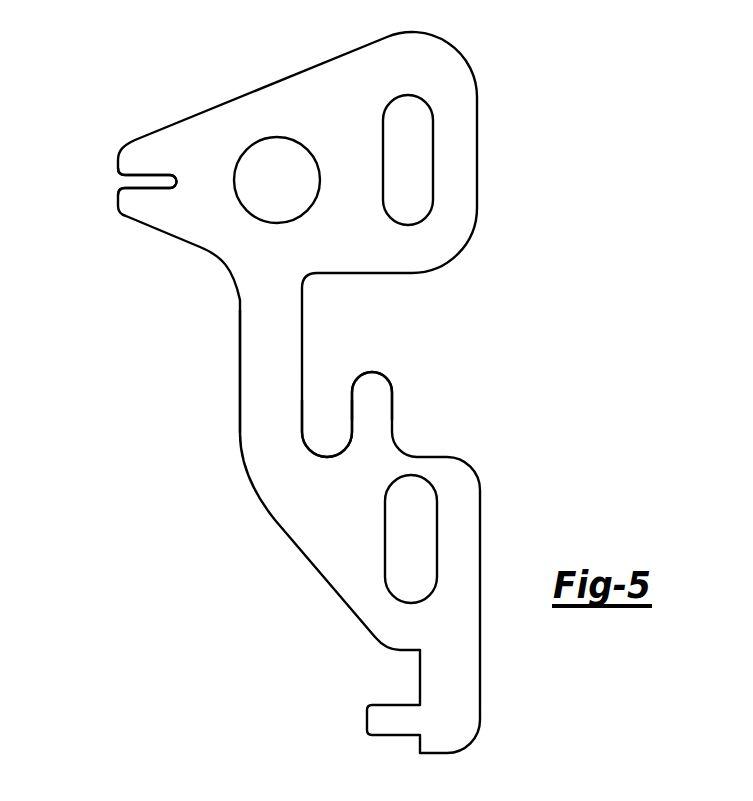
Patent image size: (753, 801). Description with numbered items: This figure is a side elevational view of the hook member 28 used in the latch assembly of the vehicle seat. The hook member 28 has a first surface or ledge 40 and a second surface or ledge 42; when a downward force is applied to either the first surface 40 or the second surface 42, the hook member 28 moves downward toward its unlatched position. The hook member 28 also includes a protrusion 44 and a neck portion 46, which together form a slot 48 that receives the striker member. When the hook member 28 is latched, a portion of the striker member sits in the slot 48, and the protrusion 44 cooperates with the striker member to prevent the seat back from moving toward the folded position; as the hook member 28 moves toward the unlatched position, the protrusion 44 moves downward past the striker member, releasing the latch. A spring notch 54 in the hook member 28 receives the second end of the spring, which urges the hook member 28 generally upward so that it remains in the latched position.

The hook member 28 is at (257, 565).
The first surface or ledge 40 is at (272, 84).
The second surface or ledge 42 is at (430, 457).
The protrusion 44 is at (360, 373).
The neck portion 46 is at (247, 357).
The slot 48 is at (328, 435).
The spring notch 54 is at (148, 182).